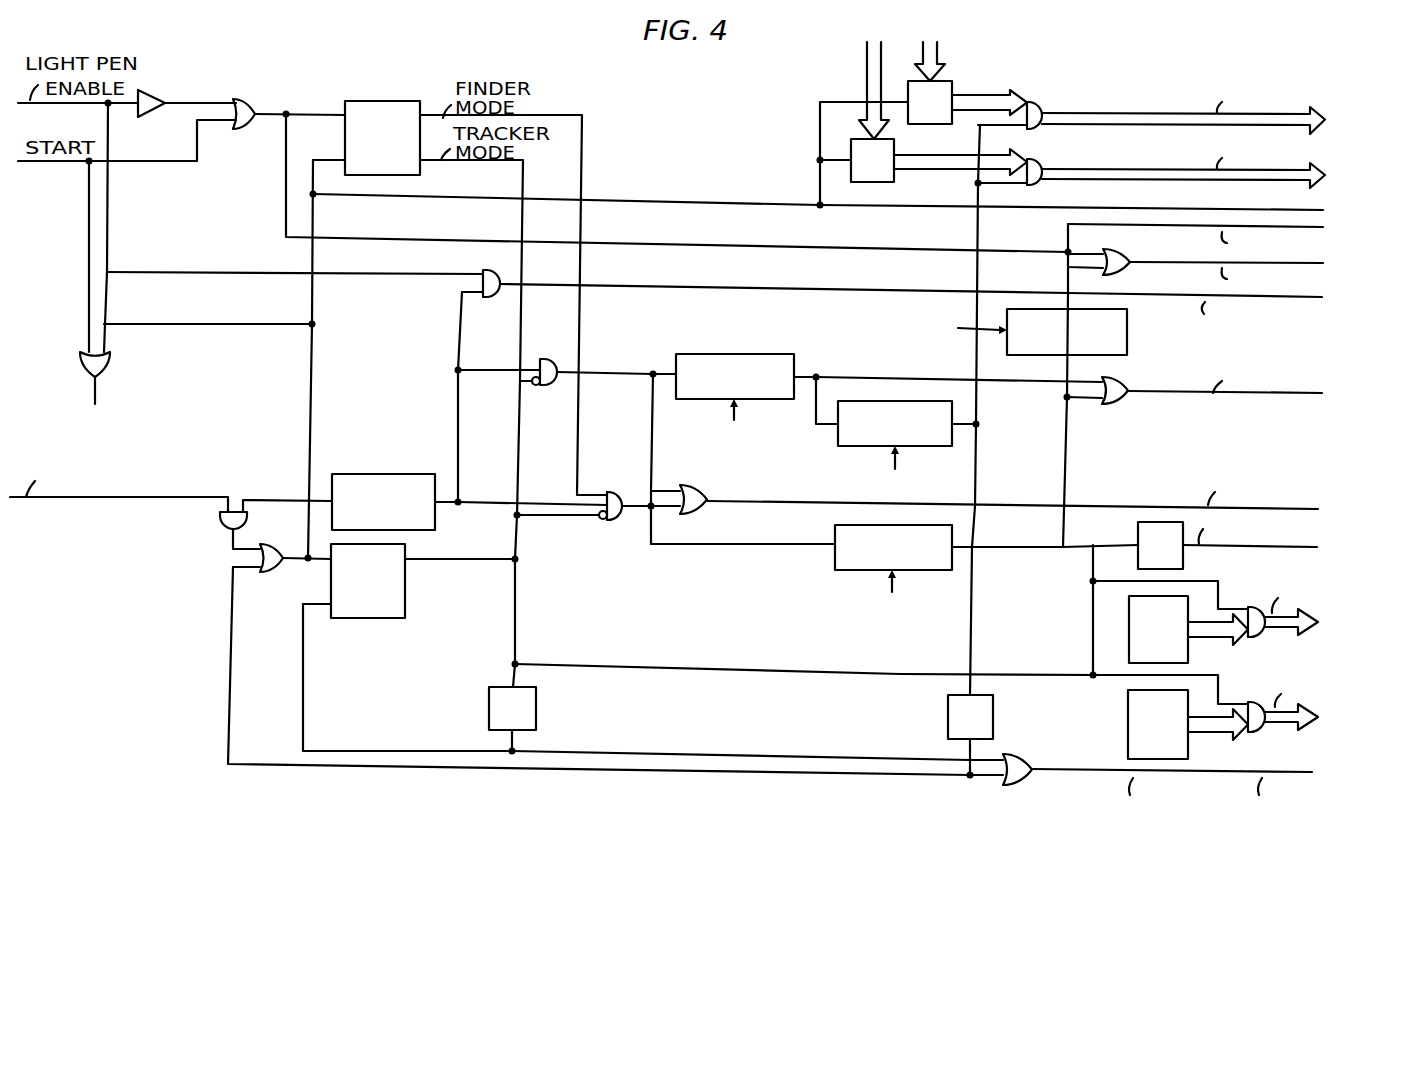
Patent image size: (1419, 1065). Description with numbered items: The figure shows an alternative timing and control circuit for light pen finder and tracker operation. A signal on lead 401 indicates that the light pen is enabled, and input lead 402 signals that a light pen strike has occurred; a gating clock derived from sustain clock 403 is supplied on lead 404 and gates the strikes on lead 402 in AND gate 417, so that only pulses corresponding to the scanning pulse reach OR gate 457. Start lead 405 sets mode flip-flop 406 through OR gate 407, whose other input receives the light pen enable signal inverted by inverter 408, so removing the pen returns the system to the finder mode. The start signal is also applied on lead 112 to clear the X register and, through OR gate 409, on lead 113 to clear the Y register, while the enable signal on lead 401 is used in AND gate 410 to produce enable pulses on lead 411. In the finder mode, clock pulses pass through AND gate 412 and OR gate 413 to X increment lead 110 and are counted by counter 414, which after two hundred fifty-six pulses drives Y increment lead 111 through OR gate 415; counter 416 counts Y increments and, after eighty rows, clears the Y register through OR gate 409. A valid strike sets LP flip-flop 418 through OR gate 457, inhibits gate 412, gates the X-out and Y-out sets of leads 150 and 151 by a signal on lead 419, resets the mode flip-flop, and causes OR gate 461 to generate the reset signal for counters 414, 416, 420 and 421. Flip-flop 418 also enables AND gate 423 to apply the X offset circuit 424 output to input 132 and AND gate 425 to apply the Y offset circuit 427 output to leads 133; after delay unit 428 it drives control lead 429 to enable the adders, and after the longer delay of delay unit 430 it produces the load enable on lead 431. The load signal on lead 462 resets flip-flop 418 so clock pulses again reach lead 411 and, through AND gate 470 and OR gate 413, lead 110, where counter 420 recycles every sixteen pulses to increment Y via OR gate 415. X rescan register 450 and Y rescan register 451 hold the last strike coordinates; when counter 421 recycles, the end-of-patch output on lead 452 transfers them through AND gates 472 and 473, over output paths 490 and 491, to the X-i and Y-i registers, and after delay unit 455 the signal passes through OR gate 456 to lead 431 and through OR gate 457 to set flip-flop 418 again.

The lead 401 is at (83, 106).
The input lead 402 is at (50, 497).
The sustain clock 403 is at (370, 472).
The lead 404 is at (260, 490).
The start lead 405 is at (286, 108).
The mode flip-flop 406 is at (376, 99).
The OR gate 407 is at (240, 127).
The inverter 408 is at (147, 113).
The OR gate 409 is at (1135, 243).
The AND gate 410 is at (488, 268).
The enable scan lead 411 is at (1152, 299).
The AND gate 412 is at (621, 518).
The OR gate 413 is at (697, 482).
The counter 414 is at (835, 555).
The OR gate 415 is at (1115, 402).
The counter 416 is at (1127, 331).
The AND gate 417 is at (220, 521).
The LP flip-flop 418 is at (360, 617).
The lead 419 is at (1101, 209).
The counter 420 is at (718, 352).
The counter 421 is at (865, 445).
The AND gate 423 is at (1258, 636).
The X offset circuit 424 is at (1188, 656).
The AND gate 425 is at (1257, 731).
The Y offset circuit 427 is at (1188, 751).
The delay unit 428 is at (1138, 528).
The control lead 429 is at (1246, 546).
The delay unit 430 is at (537, 707).
The lead 431 is at (1298, 775).
The X rescan register 450 is at (925, 124).
The Y rescan register 451 is at (893, 182).
The lead 452 is at (960, 404).
The delay unit 455 is at (948, 715).
The OR gate 456 is at (1025, 752).
The OR gate 457 is at (271, 570).
The OR gate 461 is at (110, 363).
The lead 462 is at (714, 775).
The AND gate 470 is at (552, 357).
The AND gate 472 is at (1043, 109).
The AND gate 473 is at (1043, 166).
The 8-bit output bus 490 is at (1122, 111).
The 7-bit output bus 491 is at (1122, 168).
The X increment lead 110 is at (1126, 503).
The Y increment lead 111 is at (1177, 392).
The lead 112 is at (1160, 230).
The lead 113 is at (1160, 266).
The input 132 is at (1318, 621).
The leads 133 is at (1318, 716).
The Xout set of leads 150 is at (938, 52).
The Yout set of leads 151 is at (867, 52).